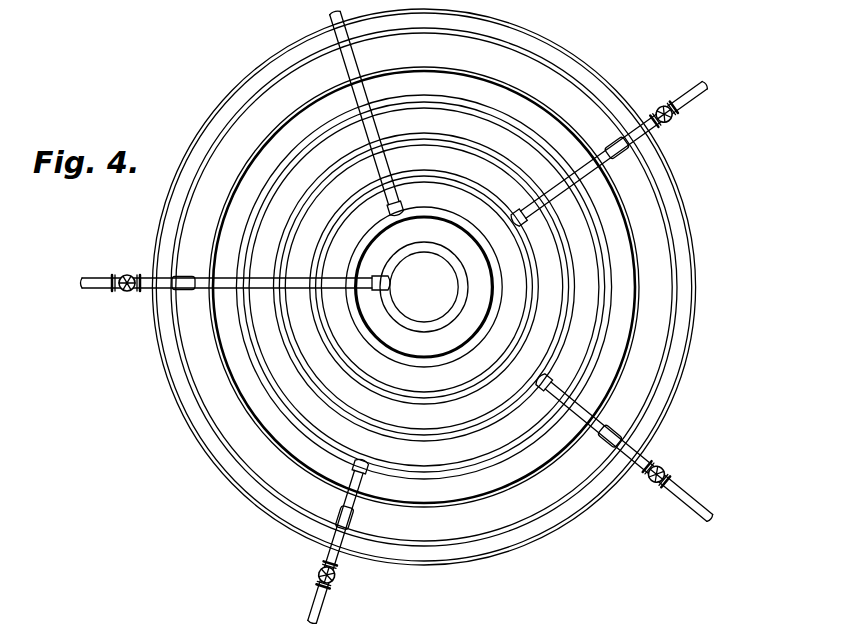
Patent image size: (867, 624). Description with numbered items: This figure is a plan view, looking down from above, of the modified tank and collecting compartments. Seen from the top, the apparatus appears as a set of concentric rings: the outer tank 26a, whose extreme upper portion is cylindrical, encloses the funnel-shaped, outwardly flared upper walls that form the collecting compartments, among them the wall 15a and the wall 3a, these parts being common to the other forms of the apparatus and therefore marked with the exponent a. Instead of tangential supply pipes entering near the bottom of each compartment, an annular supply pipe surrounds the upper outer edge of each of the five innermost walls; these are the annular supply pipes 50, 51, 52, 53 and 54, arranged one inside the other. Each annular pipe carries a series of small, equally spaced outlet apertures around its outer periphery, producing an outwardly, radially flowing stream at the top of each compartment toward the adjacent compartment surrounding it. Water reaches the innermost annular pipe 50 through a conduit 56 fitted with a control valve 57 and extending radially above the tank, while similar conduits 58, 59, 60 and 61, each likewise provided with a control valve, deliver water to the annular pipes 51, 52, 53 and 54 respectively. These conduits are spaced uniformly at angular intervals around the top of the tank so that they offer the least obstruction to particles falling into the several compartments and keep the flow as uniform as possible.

The annular supply pipe 50 is at (452, 250).
The annular supply pipe 51 is at (500, 297).
The annular supply pipe 52 is at (530, 247).
The annular supply pipe 53 is at (567, 306).
The annular supply pipe 54 is at (603, 247).
The collecting compartment wall 15a is at (656, 381).
The tank wall 3a is at (658, 188).
The tank 26a is at (683, 307).
The conduit 56 is at (223, 291).
The control valve 57 is at (116, 292).
The conduit 58 is at (345, 58).
The conduit 59 is at (676, 116).
The conduit 60 is at (622, 455).
The conduit 61 is at (328, 540).